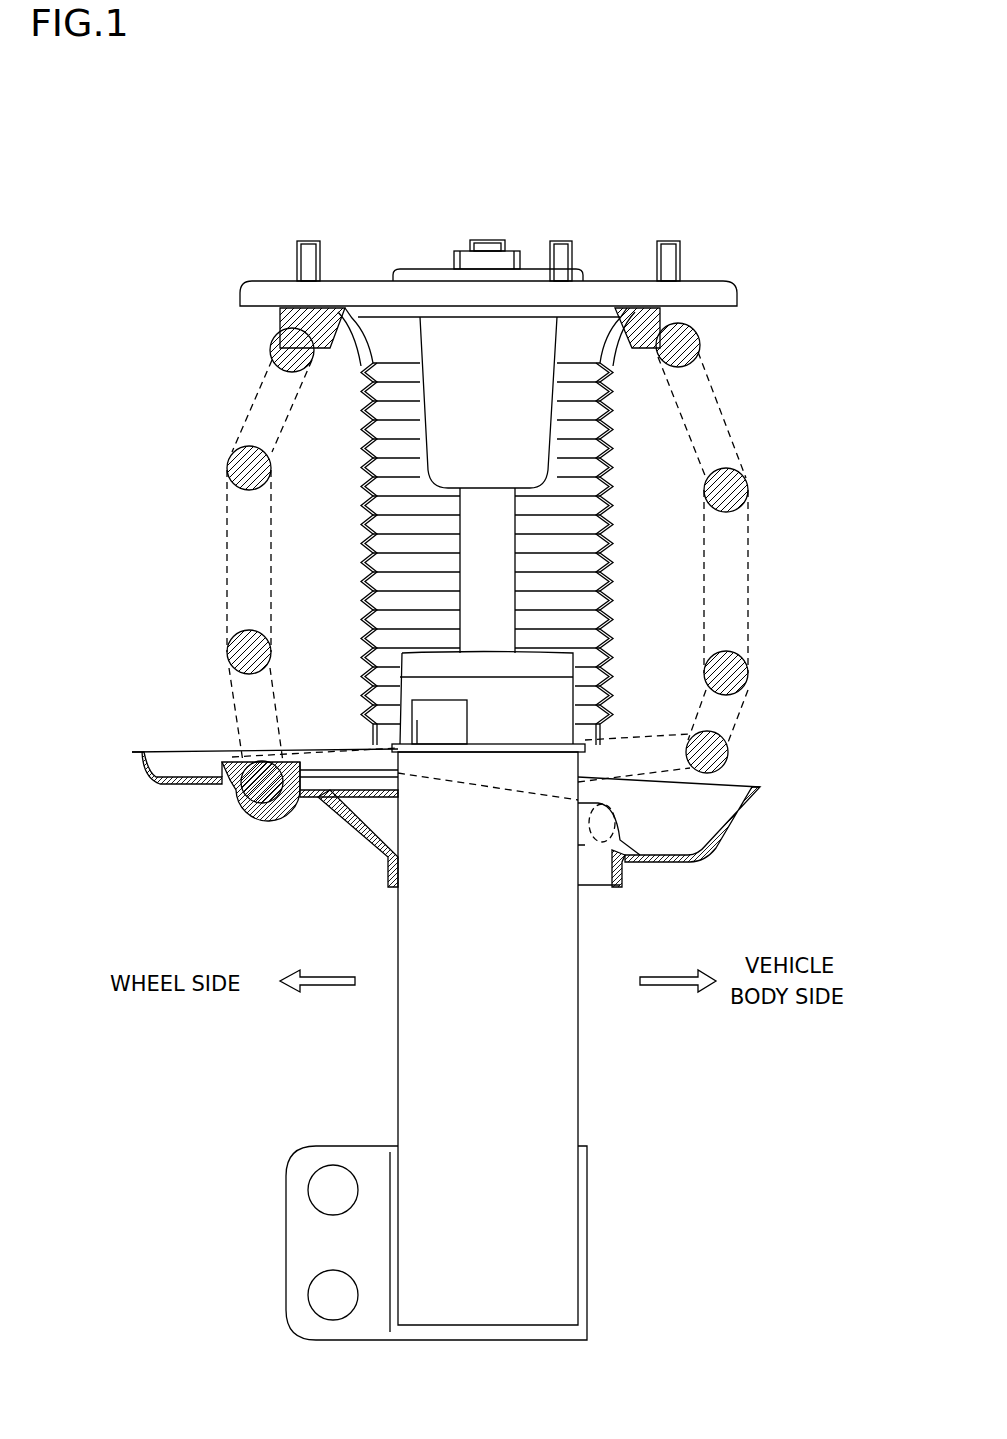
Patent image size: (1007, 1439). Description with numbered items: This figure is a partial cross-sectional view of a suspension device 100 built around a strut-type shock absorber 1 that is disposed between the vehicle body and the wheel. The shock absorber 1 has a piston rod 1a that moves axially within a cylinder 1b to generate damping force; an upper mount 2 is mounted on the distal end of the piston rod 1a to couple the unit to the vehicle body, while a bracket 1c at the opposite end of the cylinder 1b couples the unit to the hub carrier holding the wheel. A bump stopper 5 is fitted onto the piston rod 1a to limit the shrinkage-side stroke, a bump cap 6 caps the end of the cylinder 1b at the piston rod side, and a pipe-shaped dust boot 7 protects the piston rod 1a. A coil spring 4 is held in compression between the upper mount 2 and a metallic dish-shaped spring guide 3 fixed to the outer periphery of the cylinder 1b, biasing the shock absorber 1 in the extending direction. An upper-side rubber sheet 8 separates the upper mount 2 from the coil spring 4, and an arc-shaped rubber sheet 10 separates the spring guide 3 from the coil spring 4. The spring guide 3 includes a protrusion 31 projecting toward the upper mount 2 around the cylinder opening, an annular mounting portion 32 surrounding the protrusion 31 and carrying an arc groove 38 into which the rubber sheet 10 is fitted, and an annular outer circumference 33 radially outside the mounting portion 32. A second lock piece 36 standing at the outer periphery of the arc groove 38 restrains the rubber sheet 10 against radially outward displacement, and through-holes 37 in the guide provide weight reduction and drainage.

The suspension device 100 is at (218, 226).
The upper mount 2 is at (705, 296).
The upper-side rubber sheet 8 is at (278, 322).
The bump stopper 5 is at (372, 427).
The dust boot 7 is at (368, 525).
The piston rod 1a is at (492, 578).
The bump cap 6 is at (575, 676).
The coil spring 4 is at (735, 676).
The spring guide 3 is at (748, 816).
The outer circumference 33 is at (166, 792).
The second lock piece 36 is at (232, 792).
The rubber sheet 10 is at (246, 796).
The arc groove 38 is at (284, 812).
The protrusion 31 is at (332, 802).
The mounting portion 32 is at (640, 872).
The through-hole 37 is at (730, 866).
The shock absorber 1 is at (396, 1058).
The cylinder 1b is at (525, 1063).
The bracket 1c is at (290, 1172).